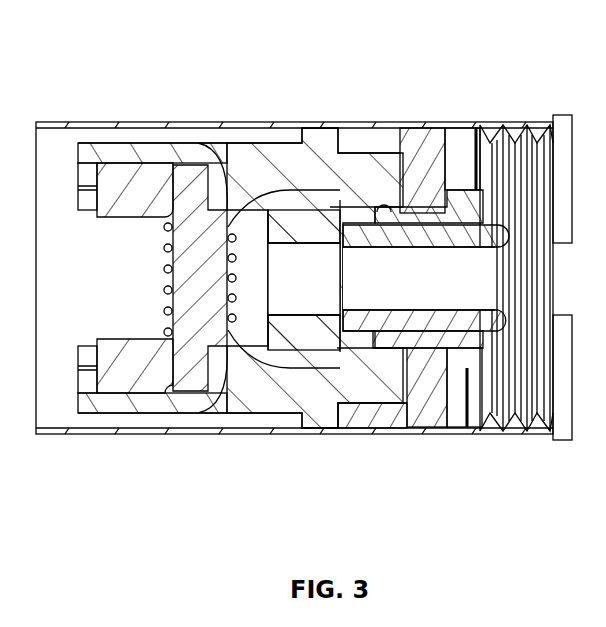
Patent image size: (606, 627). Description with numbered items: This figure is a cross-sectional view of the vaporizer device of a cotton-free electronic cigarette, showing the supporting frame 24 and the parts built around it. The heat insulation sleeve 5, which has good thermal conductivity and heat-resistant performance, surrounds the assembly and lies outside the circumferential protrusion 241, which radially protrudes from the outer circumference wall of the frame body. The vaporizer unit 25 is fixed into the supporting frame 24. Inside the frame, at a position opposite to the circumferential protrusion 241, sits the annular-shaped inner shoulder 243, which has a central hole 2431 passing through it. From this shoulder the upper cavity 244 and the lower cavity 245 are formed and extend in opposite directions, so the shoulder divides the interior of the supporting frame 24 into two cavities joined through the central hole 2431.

The heat insulation sleeve 5 is at (130, 122).
The supporting frame 24 is at (222, 392).
The vaporizer unit 25 is at (143, 278).
The circumferential protrusion 241 is at (325, 417).
The annular-shaped inner shoulder 243 is at (312, 228).
The upper cavity 244 is at (156, 398).
The lower cavity 245 is at (397, 172).
The central hole 2431 is at (409, 401).